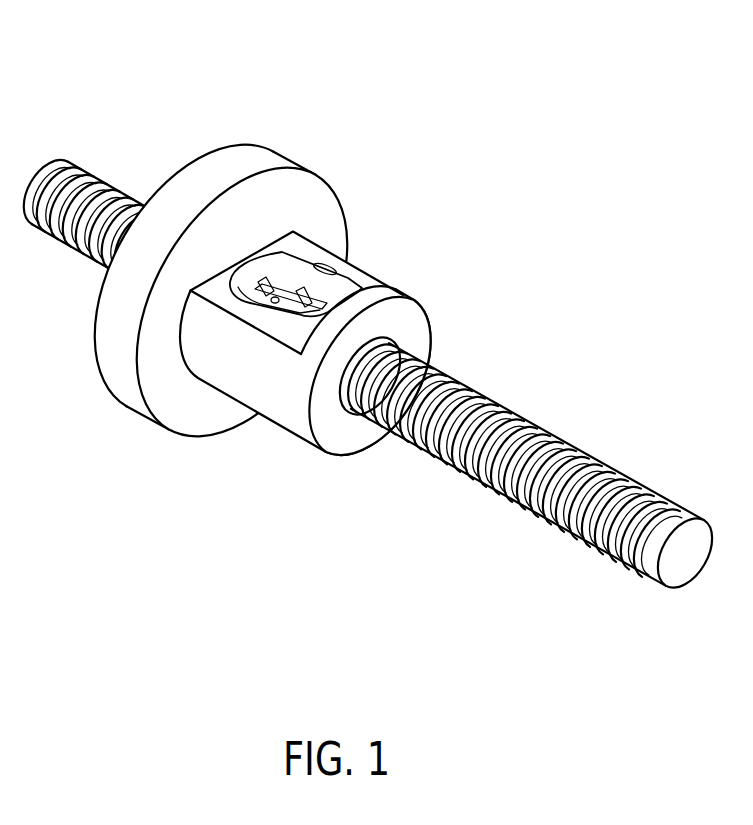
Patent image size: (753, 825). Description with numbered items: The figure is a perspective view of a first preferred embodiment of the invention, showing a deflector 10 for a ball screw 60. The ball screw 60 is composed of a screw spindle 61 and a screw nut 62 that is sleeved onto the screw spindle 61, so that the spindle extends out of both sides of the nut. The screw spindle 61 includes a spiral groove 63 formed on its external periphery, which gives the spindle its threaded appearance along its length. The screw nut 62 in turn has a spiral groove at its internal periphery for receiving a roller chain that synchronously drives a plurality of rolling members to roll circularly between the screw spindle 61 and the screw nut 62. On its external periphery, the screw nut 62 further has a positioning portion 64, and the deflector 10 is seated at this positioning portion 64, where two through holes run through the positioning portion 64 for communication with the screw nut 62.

The deflector 10 is at (358, 268).
The ball screw 60 is at (368, 374).
The screw spindle 61 is at (628, 482).
The screw nut 62 is at (290, 160).
The spiral groove 63 is at (588, 470).
The positioning portion 64 is at (280, 333).